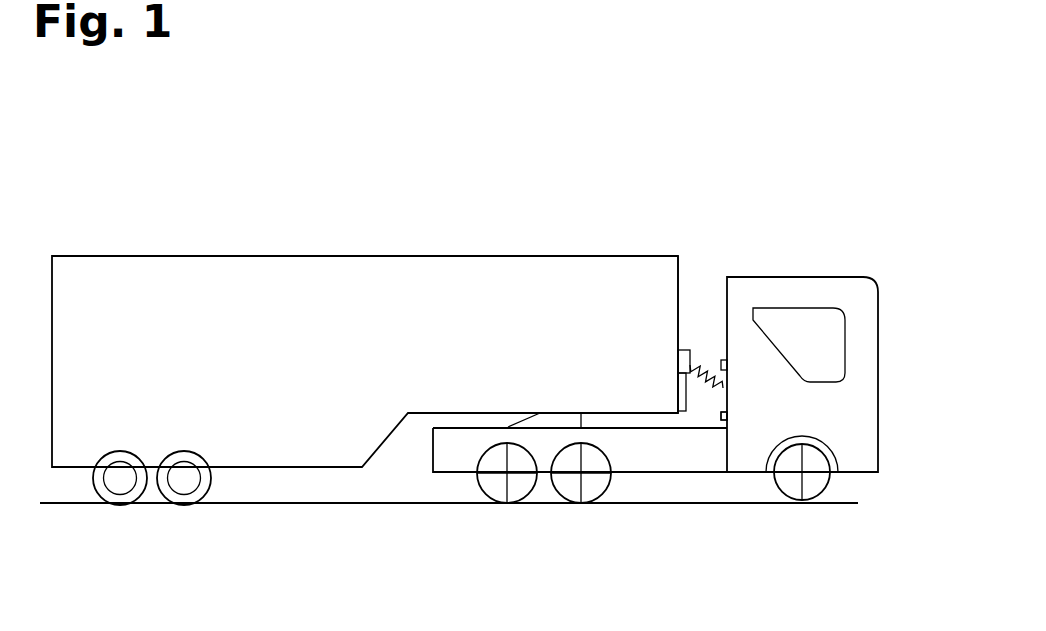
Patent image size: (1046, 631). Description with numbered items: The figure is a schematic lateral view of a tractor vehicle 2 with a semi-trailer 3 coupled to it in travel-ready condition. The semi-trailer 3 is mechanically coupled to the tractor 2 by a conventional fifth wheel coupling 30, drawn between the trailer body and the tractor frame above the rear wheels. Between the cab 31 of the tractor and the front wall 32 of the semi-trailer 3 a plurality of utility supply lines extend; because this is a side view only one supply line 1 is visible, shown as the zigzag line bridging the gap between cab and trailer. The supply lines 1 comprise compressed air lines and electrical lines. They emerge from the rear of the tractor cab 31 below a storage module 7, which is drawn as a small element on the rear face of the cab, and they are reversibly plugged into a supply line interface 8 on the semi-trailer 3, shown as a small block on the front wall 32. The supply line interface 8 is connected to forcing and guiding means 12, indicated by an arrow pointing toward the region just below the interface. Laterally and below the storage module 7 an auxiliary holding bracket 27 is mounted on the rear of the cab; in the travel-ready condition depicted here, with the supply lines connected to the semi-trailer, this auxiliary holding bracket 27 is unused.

The supply lines 1 is at (685, 349).
The tractor vehicle 2 is at (803, 263).
The semi-trailer 3 is at (192, 357).
The storage module 7 is at (724, 359).
The supply line interface 8 is at (678, 362).
The forcing and guiding means 12 is at (703, 408).
The auxiliary holding bracket 27 is at (727, 418).
The fifth wheel coupling 30 is at (572, 419).
The cab 31 is at (841, 425).
The front wall 32 is at (678, 277).